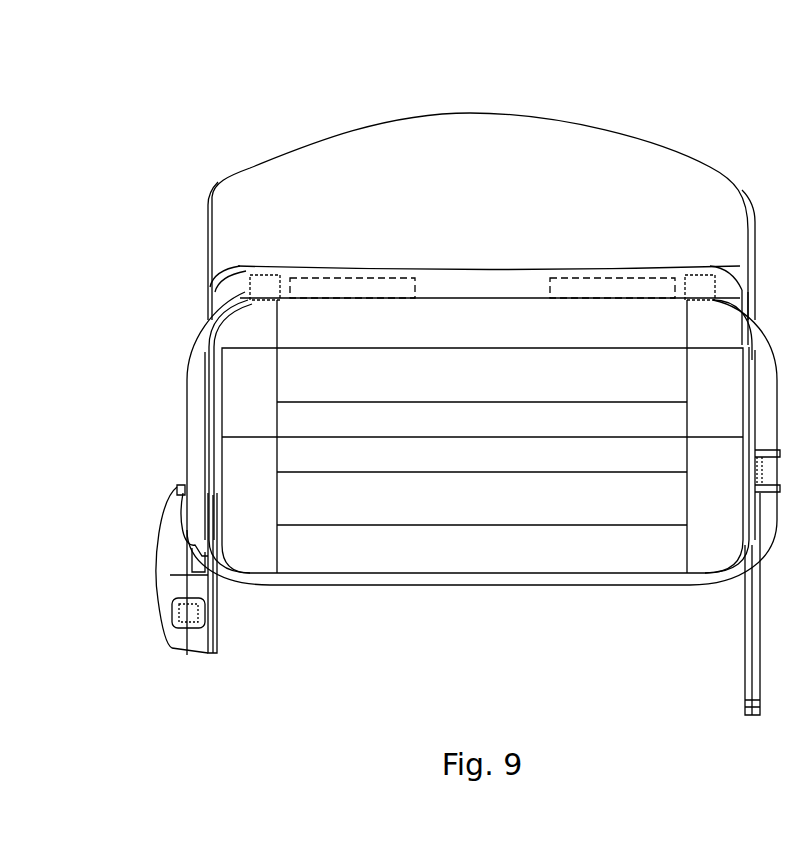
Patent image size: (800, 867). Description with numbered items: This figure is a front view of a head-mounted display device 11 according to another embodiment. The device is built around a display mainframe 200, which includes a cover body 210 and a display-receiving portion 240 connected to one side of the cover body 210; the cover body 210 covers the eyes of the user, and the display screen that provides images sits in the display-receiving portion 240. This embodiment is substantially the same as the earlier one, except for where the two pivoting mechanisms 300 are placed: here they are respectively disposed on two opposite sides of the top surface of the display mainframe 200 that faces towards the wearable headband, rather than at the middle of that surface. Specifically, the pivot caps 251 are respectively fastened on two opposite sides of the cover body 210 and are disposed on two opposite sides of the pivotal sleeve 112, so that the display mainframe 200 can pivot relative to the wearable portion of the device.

The head-mounted display device 11 is at (131, 83).
The pivotal sleeve 112 is at (620, 274).
The pivoting mechanisms 300 is at (601, 287).
The pivot caps 251 is at (742, 265).
The display mainframe 200 is at (84, 418).
The cover body 210 is at (247, 277).
The display-receiving portion 240 is at (237, 463).